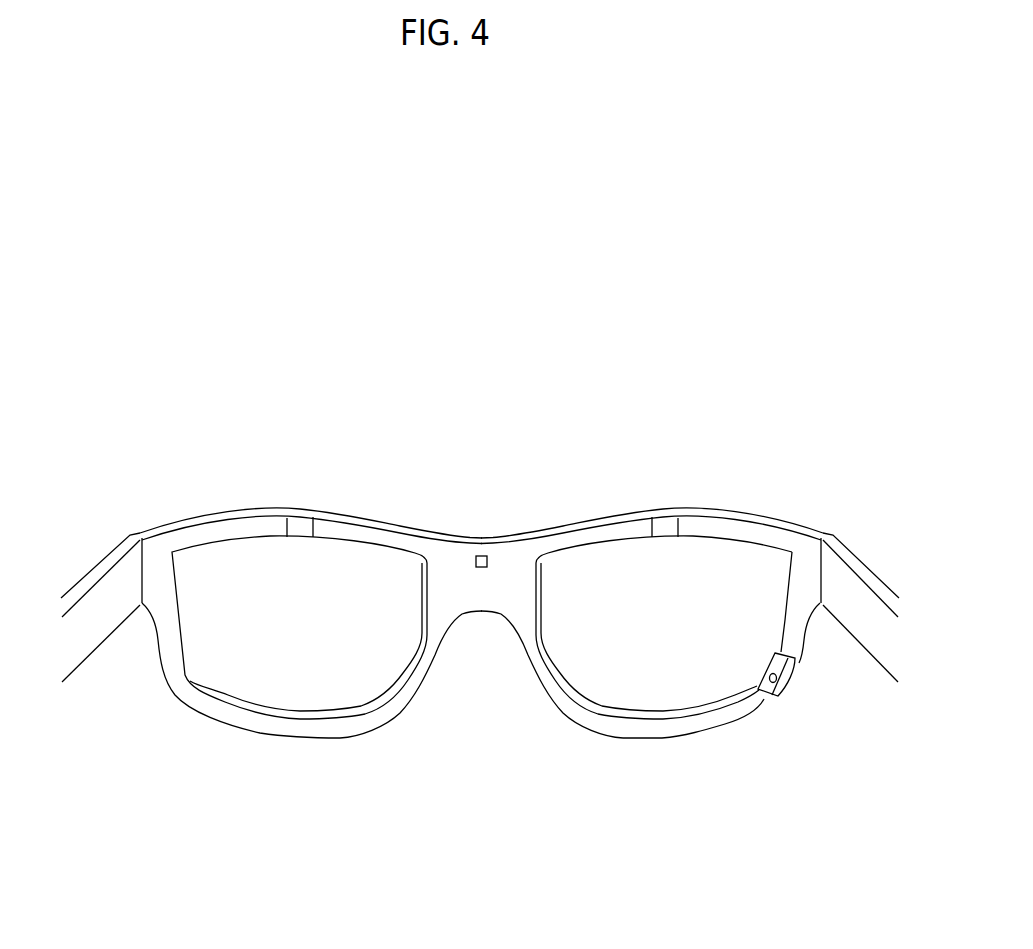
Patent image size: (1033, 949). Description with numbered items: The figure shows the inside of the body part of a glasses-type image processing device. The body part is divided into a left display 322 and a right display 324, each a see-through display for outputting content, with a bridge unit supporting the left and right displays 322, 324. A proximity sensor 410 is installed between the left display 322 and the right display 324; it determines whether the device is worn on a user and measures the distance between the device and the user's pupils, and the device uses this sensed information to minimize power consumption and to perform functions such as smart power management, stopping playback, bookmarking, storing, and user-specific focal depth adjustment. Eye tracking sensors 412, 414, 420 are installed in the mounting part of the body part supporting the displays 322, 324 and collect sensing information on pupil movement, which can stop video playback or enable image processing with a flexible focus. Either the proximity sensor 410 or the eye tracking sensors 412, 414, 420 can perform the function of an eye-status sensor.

The left display 322 is at (307, 697).
The right display 324 is at (683, 688).
The proximity sensor 410 is at (482, 556).
The eye tracking sensor 412 is at (303, 520).
The eye tracking sensor 414 is at (667, 517).
The eye tracking sensor 420 is at (785, 672).